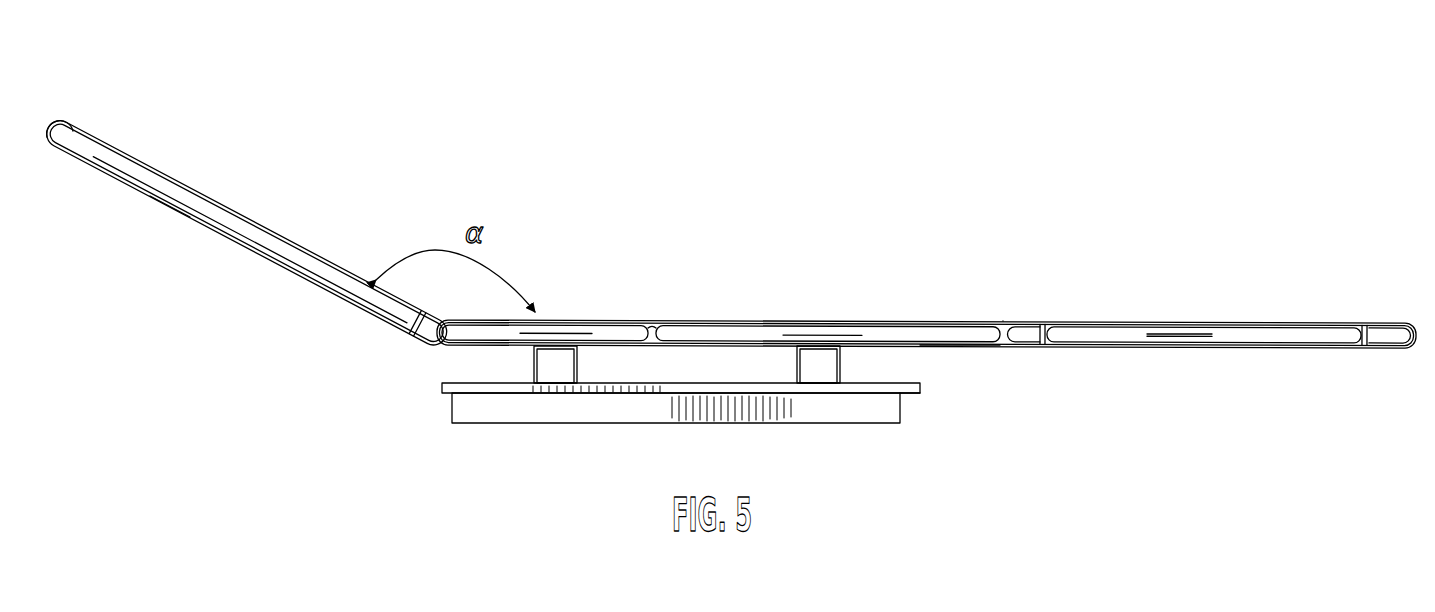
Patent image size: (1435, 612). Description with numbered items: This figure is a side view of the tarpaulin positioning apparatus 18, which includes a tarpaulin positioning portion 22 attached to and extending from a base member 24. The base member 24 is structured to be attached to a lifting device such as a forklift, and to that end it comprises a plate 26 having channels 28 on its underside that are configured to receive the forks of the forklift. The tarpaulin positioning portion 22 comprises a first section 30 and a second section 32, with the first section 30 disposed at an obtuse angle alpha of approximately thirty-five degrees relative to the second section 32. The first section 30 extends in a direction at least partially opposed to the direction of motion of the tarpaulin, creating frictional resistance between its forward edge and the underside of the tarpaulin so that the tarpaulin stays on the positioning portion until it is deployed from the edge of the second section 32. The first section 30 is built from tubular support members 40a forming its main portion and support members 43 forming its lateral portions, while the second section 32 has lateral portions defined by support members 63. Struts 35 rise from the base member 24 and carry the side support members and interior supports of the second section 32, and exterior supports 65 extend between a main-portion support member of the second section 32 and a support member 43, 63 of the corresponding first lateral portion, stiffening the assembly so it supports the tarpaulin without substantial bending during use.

The tarpaulin positioning apparatus 18 is at (562, 300).
The tarpaulin positioning portion 22 is at (960, 346).
The base member 24 is at (930, 398).
The plate 26 is at (441, 388).
The channels 28 is at (813, 424).
The first section 30 is at (250, 208).
The second section 32 is at (938, 308).
The struts 35 is at (533, 360).
The support members 40a is at (50, 127).
The support members 43 is at (168, 204).
The support members 63 is at (1210, 341).
The exterior supports 65 is at (627, 321).